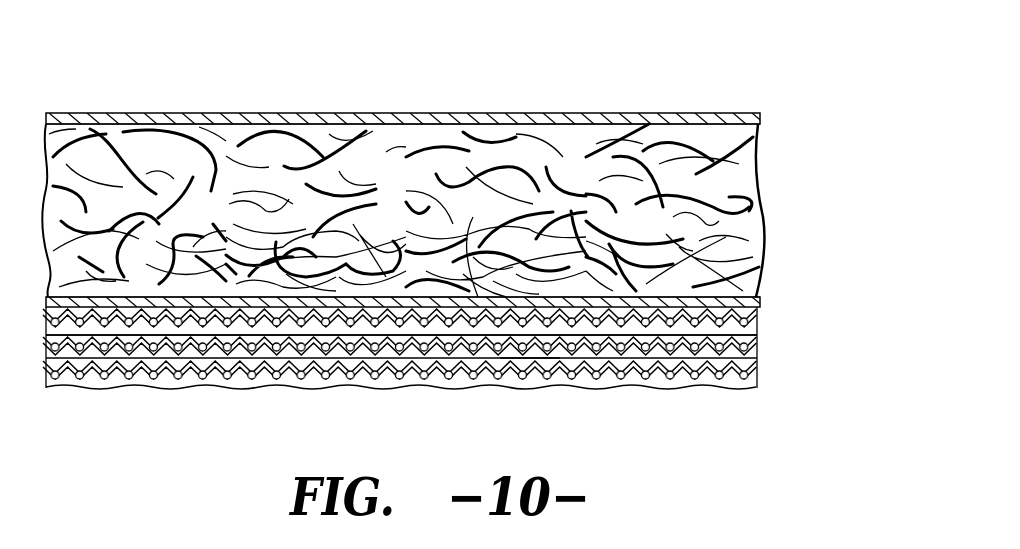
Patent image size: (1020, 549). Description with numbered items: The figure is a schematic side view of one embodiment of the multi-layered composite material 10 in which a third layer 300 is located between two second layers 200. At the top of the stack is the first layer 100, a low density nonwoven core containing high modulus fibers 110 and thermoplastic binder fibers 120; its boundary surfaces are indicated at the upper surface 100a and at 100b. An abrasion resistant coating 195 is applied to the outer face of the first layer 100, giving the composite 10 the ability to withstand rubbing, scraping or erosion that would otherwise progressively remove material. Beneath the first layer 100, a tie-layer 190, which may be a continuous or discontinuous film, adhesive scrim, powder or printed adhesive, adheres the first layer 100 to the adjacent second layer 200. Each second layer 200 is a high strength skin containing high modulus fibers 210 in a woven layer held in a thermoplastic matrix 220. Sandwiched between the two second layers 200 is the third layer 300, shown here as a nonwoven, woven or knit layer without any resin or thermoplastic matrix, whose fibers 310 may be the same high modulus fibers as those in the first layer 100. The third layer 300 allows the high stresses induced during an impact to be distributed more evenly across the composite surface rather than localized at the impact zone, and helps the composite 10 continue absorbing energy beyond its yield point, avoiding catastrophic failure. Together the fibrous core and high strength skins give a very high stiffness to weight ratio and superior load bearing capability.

The multi-layered composite material 10 is at (617, 90).
The first layer 100 is at (465, 178).
The upper surface of the first layer 100a is at (765, 297).
The upper surface of fibrous layer 100b is at (760, 124).
The high modulus fibers 110 is at (181, 124).
The thermoplastic binder fibers 120 is at (490, 185).
The tie-layer 190 is at (760, 303).
The abrasion resistant coating 195 is at (330, 113).
The second layer 200 is at (456, 382).
The high modulus fibers 210 is at (148, 388).
The thermoplastic matrix 220 is at (260, 390).
The third layer 300 is at (458, 386).
The intermediate layer filaments 310 is at (522, 355).